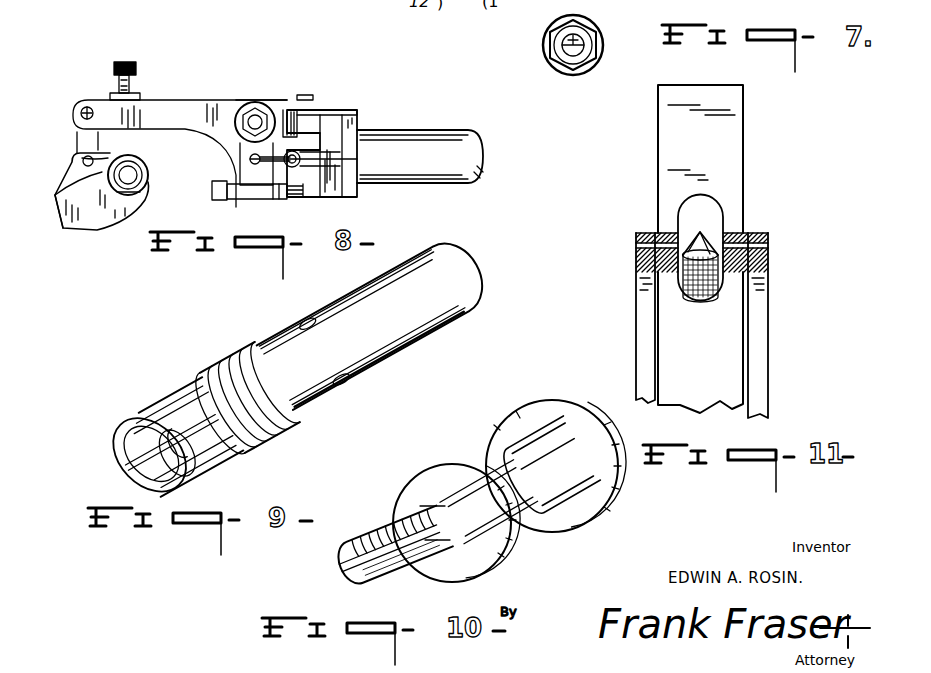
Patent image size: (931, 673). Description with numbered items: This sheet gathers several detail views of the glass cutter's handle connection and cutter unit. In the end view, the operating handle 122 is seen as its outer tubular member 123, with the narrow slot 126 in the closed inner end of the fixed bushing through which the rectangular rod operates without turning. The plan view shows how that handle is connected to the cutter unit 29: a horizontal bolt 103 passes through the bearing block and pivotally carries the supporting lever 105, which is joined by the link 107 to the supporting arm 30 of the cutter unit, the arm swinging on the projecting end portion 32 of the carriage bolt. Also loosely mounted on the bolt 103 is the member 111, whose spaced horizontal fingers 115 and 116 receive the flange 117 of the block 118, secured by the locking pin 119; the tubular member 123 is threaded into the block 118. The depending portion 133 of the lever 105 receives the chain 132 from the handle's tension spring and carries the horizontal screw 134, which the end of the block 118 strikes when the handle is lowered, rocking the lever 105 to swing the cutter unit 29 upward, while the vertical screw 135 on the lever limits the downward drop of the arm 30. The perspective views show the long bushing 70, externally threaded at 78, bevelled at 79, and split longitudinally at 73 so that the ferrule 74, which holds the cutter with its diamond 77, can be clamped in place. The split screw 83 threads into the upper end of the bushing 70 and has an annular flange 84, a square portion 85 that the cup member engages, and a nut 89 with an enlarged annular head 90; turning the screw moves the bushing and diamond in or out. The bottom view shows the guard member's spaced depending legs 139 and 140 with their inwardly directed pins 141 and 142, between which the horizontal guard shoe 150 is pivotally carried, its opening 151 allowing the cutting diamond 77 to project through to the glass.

In FIG. 7, the operating handle 122 is at (608, 41).
In FIG. 7, the outer tubular member 123 is at (556, 27).
In FIG. 8, the outer tubular member 123 is at (463, 115).
In FIG. 7, the slot 126 is at (578, 34).
In FIG. 8, the vertical screw 135 is at (136, 68).
In FIG. 8, the supporting lever 105 is at (175, 118).
In FIG. 8, the link 107 is at (86, 133).
In FIG. 8, the horizontal bolt 103 is at (258, 114).
In FIG. 8, the member 111 is at (285, 93).
In FIG. 8, the locking pin 119 is at (303, 95).
In FIG. 8, the finger 116 is at (300, 118).
In FIG. 8, the flange 117 is at (338, 122).
In FIG. 8, the block 118 is at (362, 125).
In FIG. 8, the finger 115 is at (357, 152).
In FIG. 8, the chain 132 is at (303, 168).
In FIG. 8, the depending portion 133 is at (244, 163).
In FIG. 8, the horizontal screw 134 is at (292, 199).
In FIG. 8, the projecting end portion of bolt 32 is at (145, 186).
In FIG. 8, the supporting arm 30 is at (108, 208).
In FIG. 8, the cutter unit 29 is at (70, 233).
In FIG. 9, the bushing 70 is at (371, 296).
In FIG. 9, the external threads 78 is at (198, 372).
In FIG. 9, the bevelled end 79 is at (145, 428).
In FIG. 9, the split 73 is at (165, 441).
In FIG. 10, the split screw 83 is at (391, 536).
In FIG. 10, the annular flange 84 is at (448, 478).
In FIG. 10, the square portion 85 is at (480, 462).
In FIG. 10, the nut 89 is at (567, 450).
In FIG. 10, the annular head 90 is at (568, 422).
In FIG. 11, the guard shoe 150 is at (727, 158).
In FIG. 11, the opening 151 is at (726, 213).
In FIG. 11, the diamond 77 is at (699, 232).
In FIG. 11, the ferrule 74 is at (684, 303).
In FIG. 11, the depending leg 139 is at (644, 332).
In FIG. 11, the depending leg 140 is at (760, 325).
In FIG. 11, the pin 141 is at (650, 234).
In FIG. 11, the pin 142 is at (753, 236).